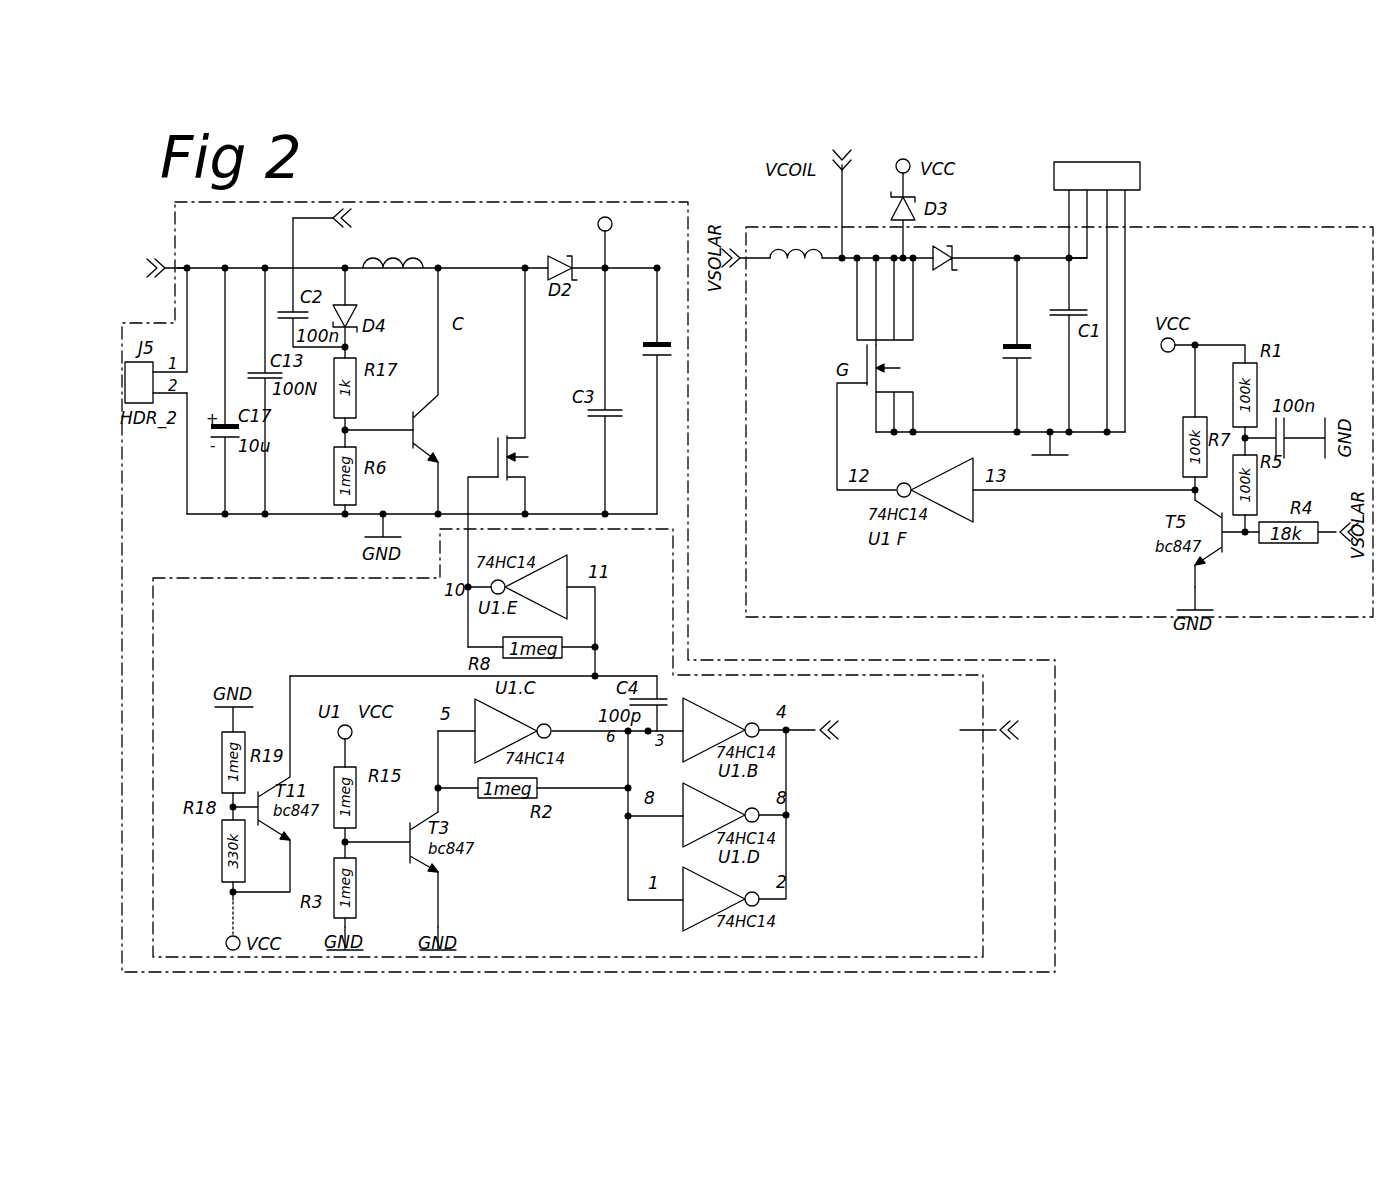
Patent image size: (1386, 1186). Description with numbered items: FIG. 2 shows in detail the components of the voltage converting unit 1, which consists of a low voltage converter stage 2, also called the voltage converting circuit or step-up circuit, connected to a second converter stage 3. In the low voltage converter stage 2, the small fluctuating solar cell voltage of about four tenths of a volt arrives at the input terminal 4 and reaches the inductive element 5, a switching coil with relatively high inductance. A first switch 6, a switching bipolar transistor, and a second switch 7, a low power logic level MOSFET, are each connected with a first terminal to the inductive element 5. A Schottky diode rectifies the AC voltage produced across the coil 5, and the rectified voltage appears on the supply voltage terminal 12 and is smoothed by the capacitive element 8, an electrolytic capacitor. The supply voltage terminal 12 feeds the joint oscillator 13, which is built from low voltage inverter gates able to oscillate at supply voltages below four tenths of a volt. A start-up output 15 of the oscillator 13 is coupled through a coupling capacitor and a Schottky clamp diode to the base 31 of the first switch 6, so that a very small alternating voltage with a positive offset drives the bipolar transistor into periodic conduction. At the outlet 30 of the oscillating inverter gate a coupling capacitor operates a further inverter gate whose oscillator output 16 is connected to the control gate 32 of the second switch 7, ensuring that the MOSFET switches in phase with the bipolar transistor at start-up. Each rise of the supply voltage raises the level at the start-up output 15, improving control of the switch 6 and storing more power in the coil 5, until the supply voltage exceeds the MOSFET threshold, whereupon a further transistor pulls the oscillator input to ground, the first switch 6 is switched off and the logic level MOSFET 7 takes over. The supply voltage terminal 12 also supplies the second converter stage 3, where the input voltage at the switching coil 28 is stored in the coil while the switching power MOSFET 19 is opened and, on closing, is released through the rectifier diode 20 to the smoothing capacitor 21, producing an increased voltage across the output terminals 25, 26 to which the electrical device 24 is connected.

The voltage converting unit 1 is at (550, 194).
The low voltage converter stage 2 is at (396, 204).
The second converter stage 3 is at (1291, 255).
The input terminal 4 is at (183, 268).
The inductive element 5 is at (414, 268).
The first switch 6 is at (428, 420).
The second switch 7 is at (528, 453).
The capacitive element 8 is at (650, 332).
The supply voltage terminal 12 is at (596, 236).
The joint oscillator 13 is at (968, 884).
The start-up output 15 is at (292, 226).
The oscillator output 16 is at (466, 530).
The switching MOSFET 19 is at (912, 343).
The diode 20 is at (944, 246).
The capacitive element 21 is at (1015, 378).
The electrical device 24 is at (1093, 176).
The output terminal 25 is at (1018, 258).
The output terminal 26 is at (1097, 441).
The inductive element 28 is at (808, 270).
The outlet of the oscillator 30 is at (576, 735).
The gate electrode 31 is at (397, 428).
The gate electrode 32 is at (476, 483).